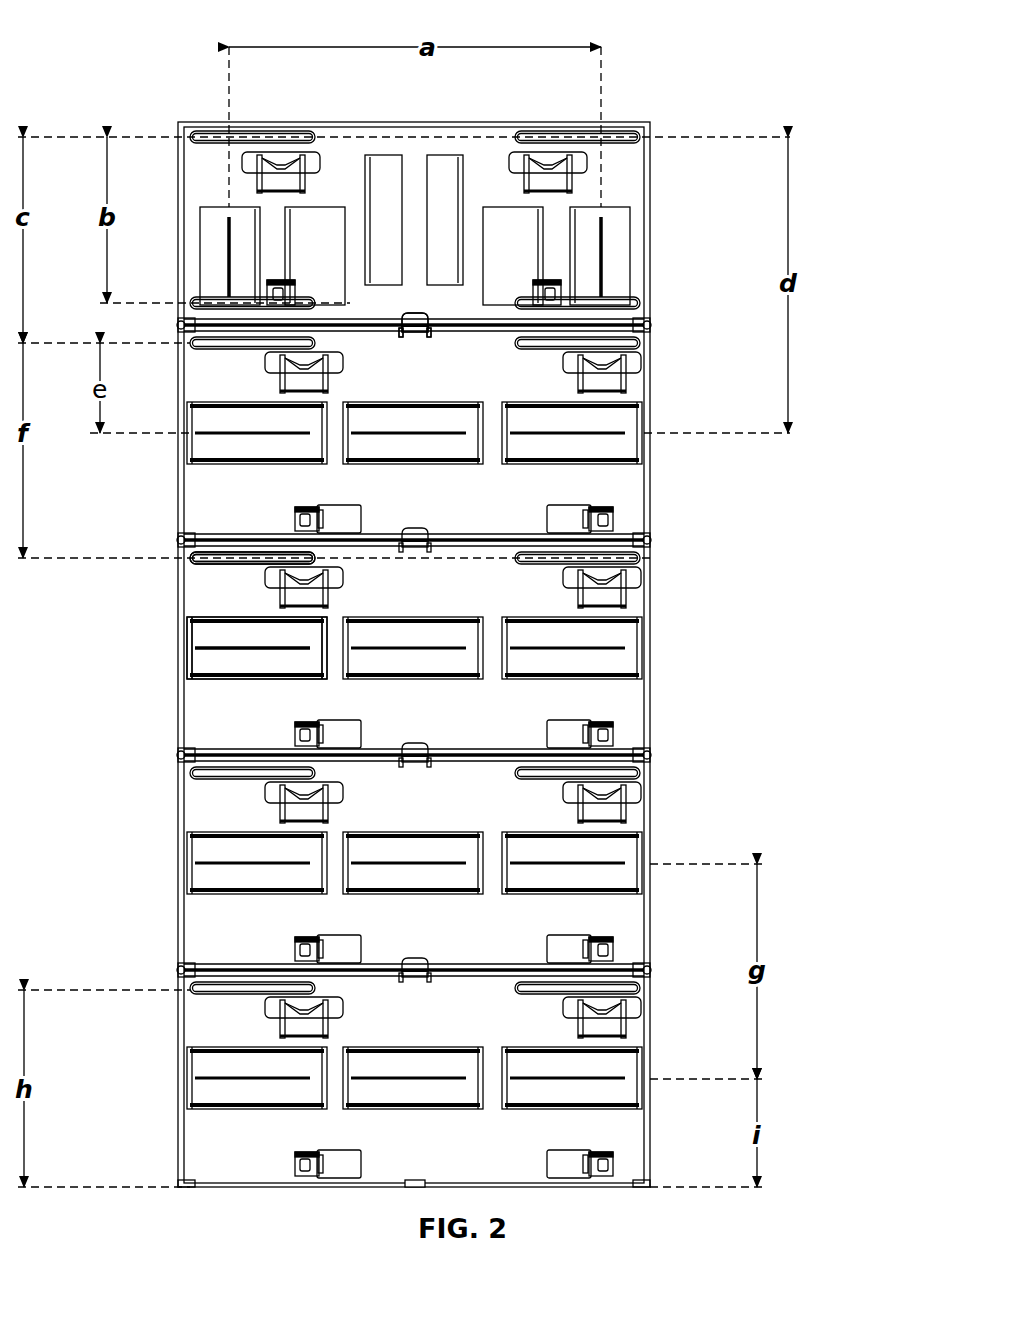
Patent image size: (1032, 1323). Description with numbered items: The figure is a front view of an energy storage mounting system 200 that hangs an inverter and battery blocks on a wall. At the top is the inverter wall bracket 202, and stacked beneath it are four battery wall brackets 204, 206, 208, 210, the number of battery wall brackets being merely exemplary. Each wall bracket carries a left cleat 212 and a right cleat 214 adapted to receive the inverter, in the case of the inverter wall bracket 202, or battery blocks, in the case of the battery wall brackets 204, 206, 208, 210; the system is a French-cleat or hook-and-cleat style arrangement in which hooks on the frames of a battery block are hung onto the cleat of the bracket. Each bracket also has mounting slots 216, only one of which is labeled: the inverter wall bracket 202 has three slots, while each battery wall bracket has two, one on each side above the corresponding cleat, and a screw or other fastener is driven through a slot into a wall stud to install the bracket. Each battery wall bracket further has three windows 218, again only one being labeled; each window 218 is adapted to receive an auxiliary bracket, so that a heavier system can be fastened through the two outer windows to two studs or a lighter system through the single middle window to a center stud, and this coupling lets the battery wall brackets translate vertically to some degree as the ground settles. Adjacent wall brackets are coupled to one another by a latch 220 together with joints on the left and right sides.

The energy storage mounting system 200 is at (127, 44).
The inverter wall bracket 202 is at (784, 98).
The battery wall bracket 204 is at (531, 427).
The battery wall bracket 206 is at (525, 638).
The battery wall bracket 208 is at (525, 853).
The battery wall bracket 210 is at (556, 1072).
The cleat 212 is at (409, 92).
The cleat 214 is at (535, 170).
The mounting slot 216 is at (215, 568).
The window 218 is at (230, 664).
The latch 220 is at (432, 326).